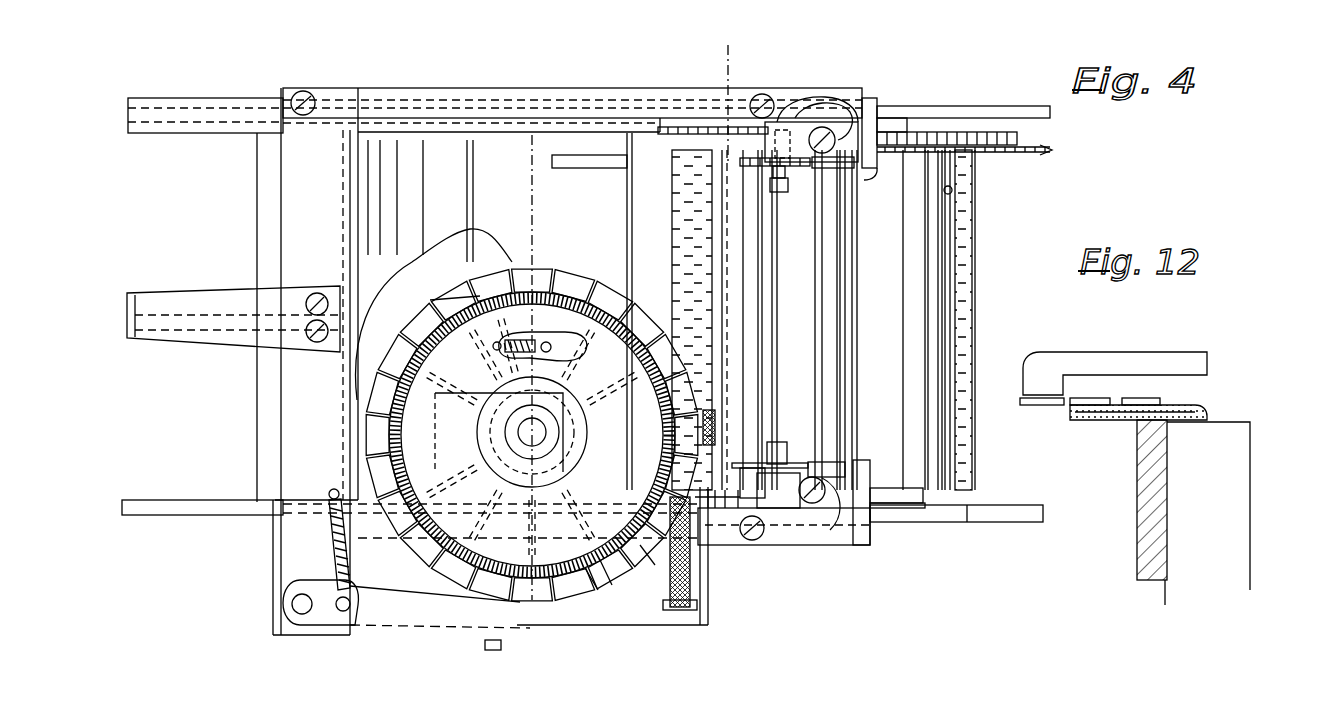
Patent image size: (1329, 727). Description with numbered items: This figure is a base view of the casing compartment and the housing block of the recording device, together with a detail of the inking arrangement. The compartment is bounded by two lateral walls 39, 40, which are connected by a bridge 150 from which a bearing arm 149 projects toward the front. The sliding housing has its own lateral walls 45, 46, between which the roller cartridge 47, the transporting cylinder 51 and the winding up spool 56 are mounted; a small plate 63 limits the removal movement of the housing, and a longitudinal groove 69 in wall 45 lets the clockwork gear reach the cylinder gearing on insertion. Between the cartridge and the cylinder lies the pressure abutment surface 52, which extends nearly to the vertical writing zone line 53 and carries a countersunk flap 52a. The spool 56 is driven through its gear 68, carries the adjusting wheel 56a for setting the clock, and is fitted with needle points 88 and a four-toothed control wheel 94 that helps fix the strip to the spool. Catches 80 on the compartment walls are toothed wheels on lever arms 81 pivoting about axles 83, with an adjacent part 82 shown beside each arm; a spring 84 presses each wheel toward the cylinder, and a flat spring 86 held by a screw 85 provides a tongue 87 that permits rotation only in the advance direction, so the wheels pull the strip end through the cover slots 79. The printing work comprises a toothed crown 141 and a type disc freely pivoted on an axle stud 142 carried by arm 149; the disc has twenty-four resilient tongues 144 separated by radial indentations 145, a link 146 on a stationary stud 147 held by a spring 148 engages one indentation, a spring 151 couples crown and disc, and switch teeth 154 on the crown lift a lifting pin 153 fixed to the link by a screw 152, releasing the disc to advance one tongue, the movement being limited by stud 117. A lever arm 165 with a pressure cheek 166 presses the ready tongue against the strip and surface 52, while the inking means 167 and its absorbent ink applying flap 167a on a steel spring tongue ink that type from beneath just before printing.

In FIG. 4, the lateral wall 39 is at (712, 530).
In FIG. 12, the lateral wall 39 is at (1140, 460).
In FIG. 4, the lateral wall 40 is at (388, 95).
In FIG. 4, the lateral wall of the housing 45 is at (235, 100).
In FIG. 4, the lateral wall of the housing 46 is at (210, 517).
In FIG. 4, the roller cartridge 47 is at (452, 152).
In FIG. 4, the transporting cylinder 51 is at (757, 307).
In FIG. 4, the pressure abutment surface 52 is at (700, 275).
In FIG. 4, the flap 52a is at (715, 420).
In FIG. 4, the writing zone line 53 is at (735, 50).
In FIG. 4, the winding up spool 56 is at (935, 363).
In FIG. 12, the winding up spool 56 is at (1113, 378).
In FIG. 4, the adjusting wheel 56a is at (1052, 148).
In FIG. 4, the small plate 63 is at (210, 340).
In FIG. 4, the gear of the winding up spool 68 is at (1030, 137).
In FIG. 4, the longitudinal groove 69 is at (182, 100).
In FIG. 4, the slots 79 is at (575, 157).
In FIG. 4, the catch 80 is at (748, 160).
In FIG. 4, the lever arm 81 is at (795, 130).
In FIG. 4, the block 82 is at (787, 190).
In FIG. 4, the horizontal axle 83 is at (868, 110).
In FIG. 4, the spring 84 is at (826, 100).
In FIG. 4, the screw 85 is at (830, 128).
In FIG. 4, the flat spring 86 is at (870, 135).
In FIG. 4, the tongue 87 is at (830, 168).
In FIG. 4, the needle point 88 is at (952, 192).
In FIG. 4, the control wheel 94 is at (950, 128).
In FIG. 4, the stud 117 is at (470, 425).
In FIG. 4, the toothed crown 141 is at (632, 572).
In FIG. 4, the axle stud 142 is at (430, 390).
In FIG. 4, the resilient tongues 144 is at (520, 268).
In FIG. 12, the resilient tongues 144 is at (1140, 400).
In FIG. 4, the radial indentations 145 is at (602, 580).
In FIG. 4, the link 146 is at (385, 625).
In FIG. 4, the stationary stud 147 is at (290, 607).
In FIG. 4, the spring 148 is at (330, 555).
In FIG. 4, the bearing arm 149 is at (527, 435).
In FIG. 4, the bridge 150 is at (310, 200).
In FIG. 4, the spring 151 is at (545, 272).
In FIG. 4, the screw 152 is at (490, 648).
In FIG. 4, the lifting pin 153 is at (445, 635).
In FIG. 4, the switch tooth 154 is at (425, 302).
In FIG. 12, the lever arm 165 is at (1095, 358).
In FIG. 12, the pressure cheek 166 is at (1042, 388).
In FIG. 4, the inking means 167 is at (688, 615).
In FIG. 12, the inking means 167 is at (1200, 482).
In FIG. 12, the ink applying flap 167a is at (1195, 406).